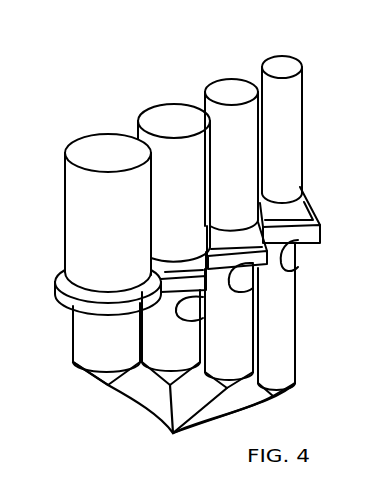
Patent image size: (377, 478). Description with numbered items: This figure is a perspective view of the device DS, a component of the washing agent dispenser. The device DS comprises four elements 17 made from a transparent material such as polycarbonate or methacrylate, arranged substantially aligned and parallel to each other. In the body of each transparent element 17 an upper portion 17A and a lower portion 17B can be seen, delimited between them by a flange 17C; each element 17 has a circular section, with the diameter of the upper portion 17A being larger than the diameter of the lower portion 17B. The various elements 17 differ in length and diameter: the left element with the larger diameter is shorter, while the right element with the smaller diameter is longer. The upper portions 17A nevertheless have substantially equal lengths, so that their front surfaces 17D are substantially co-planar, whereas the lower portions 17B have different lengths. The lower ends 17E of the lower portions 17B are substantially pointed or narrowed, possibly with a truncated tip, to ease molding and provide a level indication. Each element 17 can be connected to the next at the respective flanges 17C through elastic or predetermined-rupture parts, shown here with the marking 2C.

The transparent element 17 is at (60, 168).
The upper portion 17A is at (80, 214).
The lower portion 17B is at (78, 345).
The flange 17C is at (57, 290).
The front surface 17D is at (277, 65).
The lower end 17E is at (173, 434).
The retaining clips 2C is at (203, 318).
The device DS is at (100, 427).